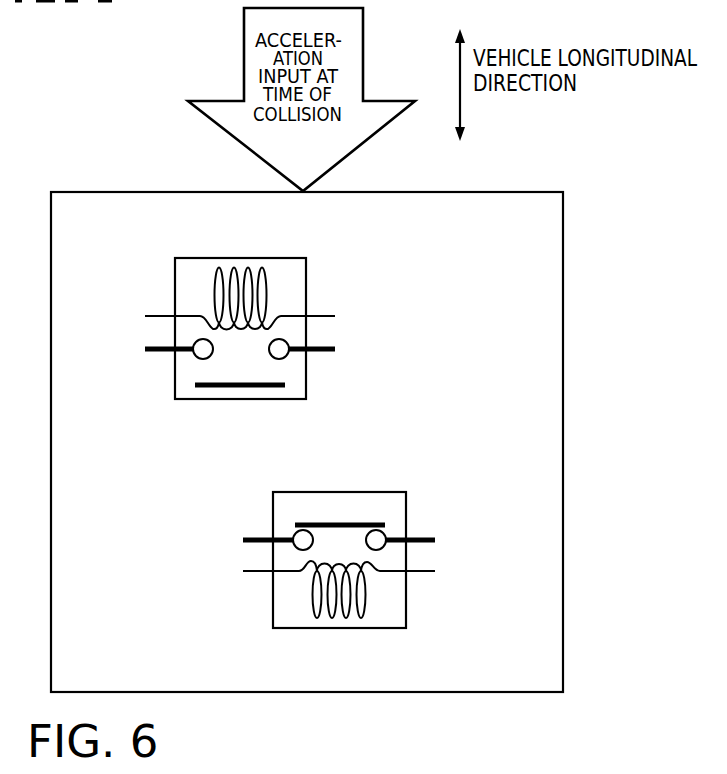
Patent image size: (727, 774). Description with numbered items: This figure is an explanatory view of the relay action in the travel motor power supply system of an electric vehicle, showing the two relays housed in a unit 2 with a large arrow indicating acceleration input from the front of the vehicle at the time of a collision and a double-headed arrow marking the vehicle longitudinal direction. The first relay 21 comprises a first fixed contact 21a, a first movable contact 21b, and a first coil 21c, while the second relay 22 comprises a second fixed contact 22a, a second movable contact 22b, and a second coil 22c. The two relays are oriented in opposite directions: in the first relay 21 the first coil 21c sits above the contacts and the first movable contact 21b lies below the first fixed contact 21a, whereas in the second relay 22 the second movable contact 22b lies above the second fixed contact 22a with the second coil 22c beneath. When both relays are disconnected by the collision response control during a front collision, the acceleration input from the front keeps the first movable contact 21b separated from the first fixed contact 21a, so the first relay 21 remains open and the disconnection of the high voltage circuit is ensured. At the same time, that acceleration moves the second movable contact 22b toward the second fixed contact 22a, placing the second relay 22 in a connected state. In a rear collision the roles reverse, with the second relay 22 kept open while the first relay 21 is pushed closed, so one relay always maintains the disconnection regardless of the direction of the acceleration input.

The sensor unit 2 is at (569, 363).
The first relay 21 is at (292, 253).
The first fixed contact 21a is at (195, 358).
The first movable contact 21b is at (208, 390).
The first coil 21c is at (268, 291).
The second relay 22 is at (376, 486).
The second fixed contact 22a is at (297, 548).
The second movable contact 22b is at (320, 522).
The second coil 22c is at (364, 606).